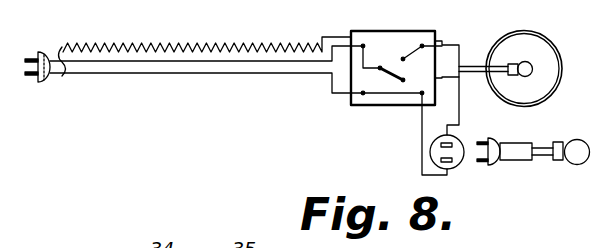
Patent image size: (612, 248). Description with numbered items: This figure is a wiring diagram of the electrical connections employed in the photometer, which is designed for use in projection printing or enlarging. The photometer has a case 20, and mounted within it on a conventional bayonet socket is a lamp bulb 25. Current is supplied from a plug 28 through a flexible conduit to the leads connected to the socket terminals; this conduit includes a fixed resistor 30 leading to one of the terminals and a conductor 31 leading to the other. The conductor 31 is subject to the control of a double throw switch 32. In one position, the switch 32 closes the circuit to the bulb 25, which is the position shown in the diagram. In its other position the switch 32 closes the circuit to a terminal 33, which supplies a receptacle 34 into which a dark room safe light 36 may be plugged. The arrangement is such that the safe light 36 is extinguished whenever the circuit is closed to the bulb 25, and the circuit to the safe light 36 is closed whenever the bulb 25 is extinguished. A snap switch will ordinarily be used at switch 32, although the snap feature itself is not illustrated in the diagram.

The case 20 is at (581, 43).
The lamp bulb 25 is at (526, 61).
The plug 28 is at (39, 53).
The fixed resistor 30 is at (197, 44).
The conductor 31 is at (217, 64).
The double throw switch 32 is at (395, 79).
The terminal 33 is at (404, 57).
The receptacle 34 is at (459, 139).
The dark room safe light 36 is at (573, 146).